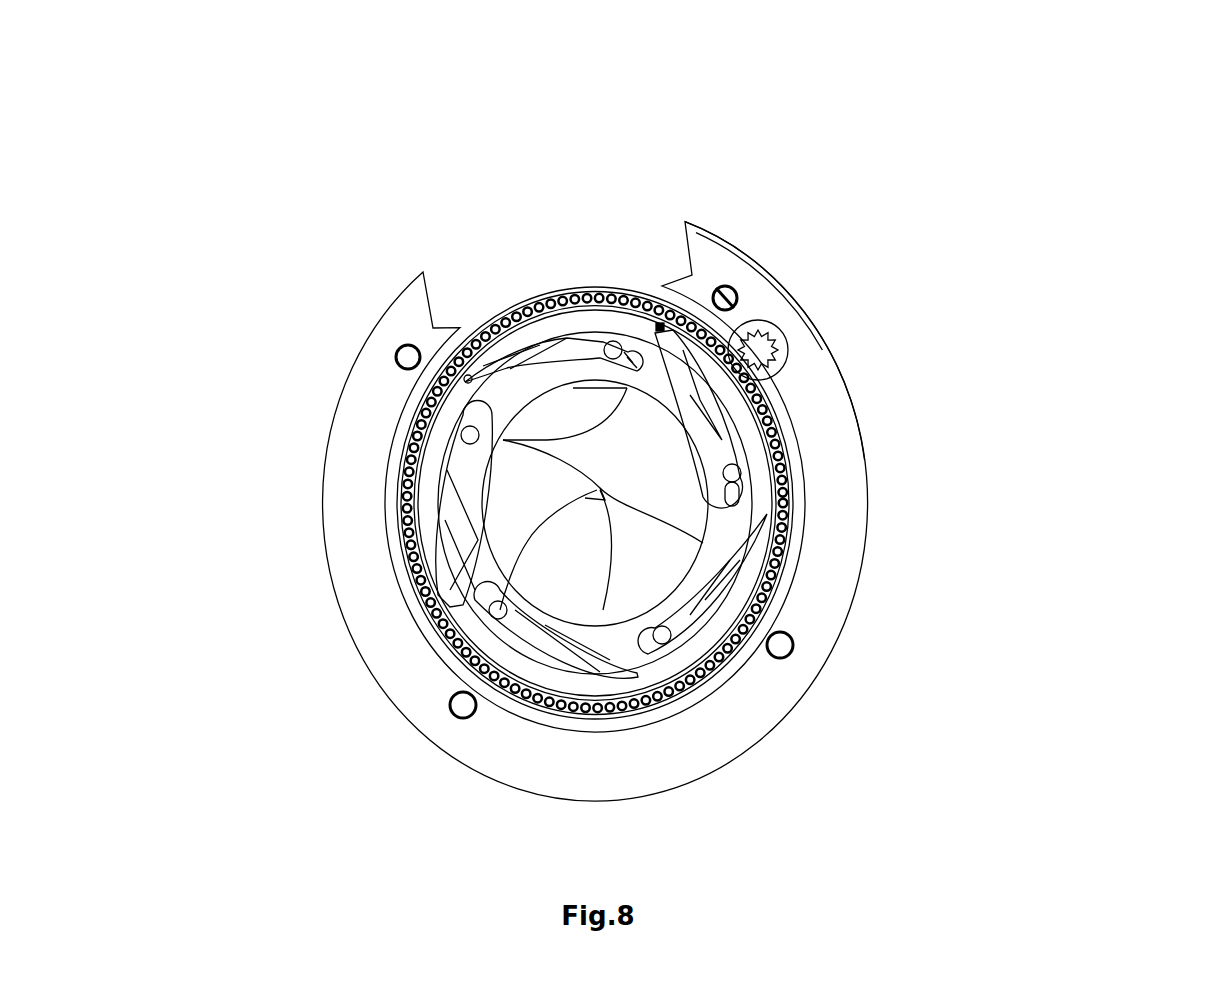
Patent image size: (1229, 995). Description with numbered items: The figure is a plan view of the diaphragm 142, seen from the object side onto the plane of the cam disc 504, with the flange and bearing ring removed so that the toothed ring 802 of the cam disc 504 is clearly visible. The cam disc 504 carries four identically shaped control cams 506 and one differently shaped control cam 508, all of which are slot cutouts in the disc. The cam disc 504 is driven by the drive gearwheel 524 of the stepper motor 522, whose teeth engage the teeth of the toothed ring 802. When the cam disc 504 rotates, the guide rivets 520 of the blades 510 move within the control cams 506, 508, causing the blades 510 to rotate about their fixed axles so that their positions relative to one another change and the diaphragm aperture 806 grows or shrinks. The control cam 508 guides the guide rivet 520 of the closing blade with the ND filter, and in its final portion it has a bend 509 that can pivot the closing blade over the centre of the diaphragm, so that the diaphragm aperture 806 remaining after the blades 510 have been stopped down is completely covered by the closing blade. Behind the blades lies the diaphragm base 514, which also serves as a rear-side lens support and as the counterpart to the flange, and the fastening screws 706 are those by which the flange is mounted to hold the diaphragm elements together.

The diaphragm 142 is at (1053, 166).
The cam disc 504 is at (520, 337).
The control cam 506 is at (721, 582).
The control cam 508 is at (573, 353).
The bend 509 is at (632, 355).
The blade 510 is at (662, 474).
The diaphragm base 514 is at (865, 452).
The guide rivet 520 is at (672, 638).
The stepper motor 522 is at (820, 303).
The drive gearwheel 524 is at (760, 350).
The fastening screw 706 is at (395, 345).
The toothed ring 802 is at (557, 300).
The diaphragm aperture 806 is at (600, 503).